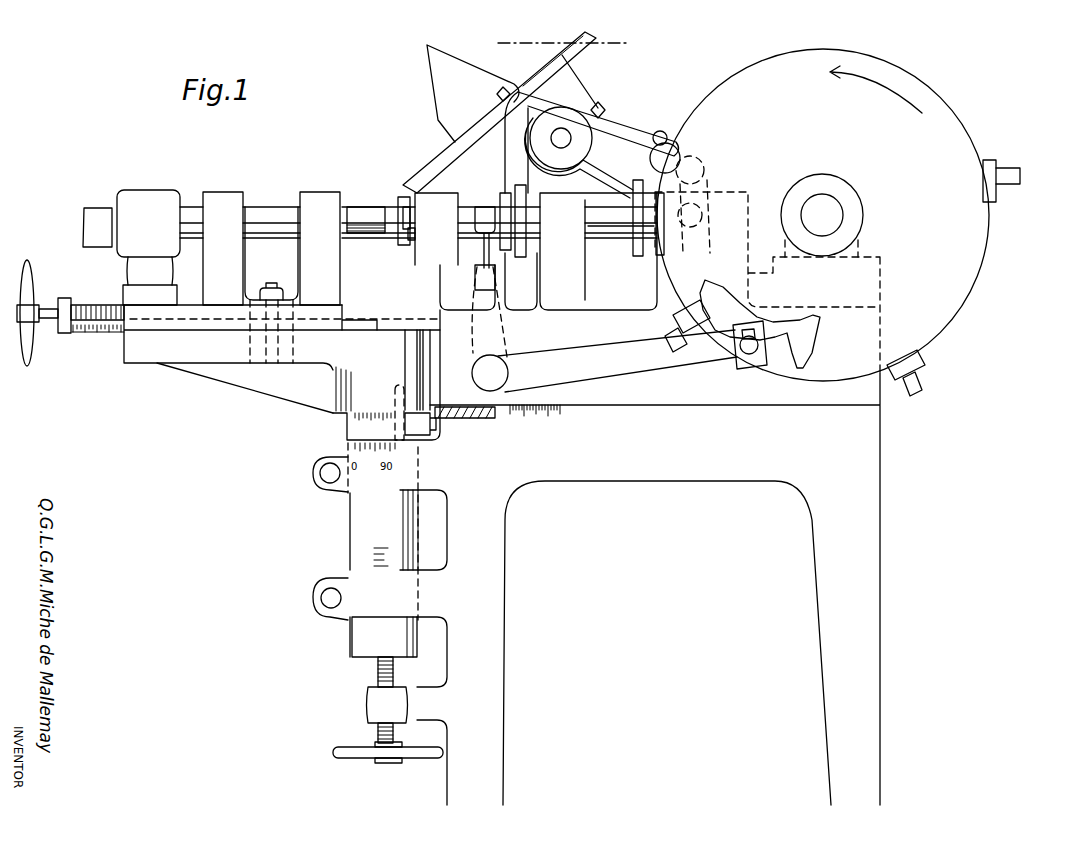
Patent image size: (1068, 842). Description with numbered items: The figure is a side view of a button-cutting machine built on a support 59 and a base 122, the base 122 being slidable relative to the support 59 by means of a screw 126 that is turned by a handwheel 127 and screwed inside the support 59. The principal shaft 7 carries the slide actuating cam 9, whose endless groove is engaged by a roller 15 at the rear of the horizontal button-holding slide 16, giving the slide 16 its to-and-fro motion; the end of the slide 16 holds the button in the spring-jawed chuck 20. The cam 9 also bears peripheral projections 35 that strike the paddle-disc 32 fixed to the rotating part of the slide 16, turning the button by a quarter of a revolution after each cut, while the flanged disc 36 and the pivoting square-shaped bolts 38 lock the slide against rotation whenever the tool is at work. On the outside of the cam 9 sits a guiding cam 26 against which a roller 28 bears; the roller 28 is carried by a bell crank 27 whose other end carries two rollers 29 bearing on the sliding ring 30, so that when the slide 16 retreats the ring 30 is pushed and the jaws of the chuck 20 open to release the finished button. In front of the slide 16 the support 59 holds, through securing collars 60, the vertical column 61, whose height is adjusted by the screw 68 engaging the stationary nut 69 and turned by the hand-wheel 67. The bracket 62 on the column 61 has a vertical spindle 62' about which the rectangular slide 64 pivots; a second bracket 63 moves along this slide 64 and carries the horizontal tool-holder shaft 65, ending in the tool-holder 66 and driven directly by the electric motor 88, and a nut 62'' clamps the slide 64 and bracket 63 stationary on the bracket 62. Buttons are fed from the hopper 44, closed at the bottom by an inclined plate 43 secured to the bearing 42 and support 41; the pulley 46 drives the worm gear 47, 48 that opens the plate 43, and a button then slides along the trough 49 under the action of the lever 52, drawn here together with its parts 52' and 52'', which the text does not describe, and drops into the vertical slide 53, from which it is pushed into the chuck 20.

The principal shaft 7 is at (822, 215).
The slide actuating cam 9 is at (950, 248).
The roller 15 is at (692, 215).
The slide 16 is at (612, 226).
The button-holding chuck 20 is at (412, 233).
The guiding cam 26 is at (800, 355).
The bell crank 27 is at (616, 366).
The roller 28 is at (747, 352).
The rollers 29 is at (492, 243).
The sliding ring 30 is at (505, 205).
The paddle-disc 32 is at (638, 197).
The projections 35 is at (921, 383).
The flanged disc 36 is at (522, 248).
The square-shaped bolts 38 is at (483, 284).
The support 41 is at (514, 138).
The bearing 42 is at (574, 85).
The inclined plate 43 is at (560, 48).
The hopper 44 is at (443, 60).
The pulley 46 is at (587, 158).
The worm gear 47 is at (645, 138).
The worm gear 48 is at (605, 110).
The trough 49 is at (447, 153).
The lever 52 is at (703, 121).
The roller 52' is at (704, 148).
The roller arm lower part 52'' is at (718, 200).
The vertical slide 53 is at (404, 213).
The support 59 is at (573, 475).
The securing collars 60 is at (364, 485).
The column 61 is at (365, 547).
The bracket 62 is at (282, 364).
The vertical spindle 62' is at (271, 367).
The nut 62'' is at (271, 253).
The second bracket 63 is at (210, 320).
The rectangular slide 64 is at (105, 333).
The tool-holder shaft 65 is at (190, 217).
The tool-holder 66 is at (368, 213).
The hand-wheel 67 is at (352, 753).
The screw 68 is at (383, 670).
The stationary nut 69 is at (382, 705).
The electric motor 88 is at (140, 207).
The base 122 is at (870, 408).
The screw 126 is at (468, 420).
The handwheel 127 is at (400, 395).